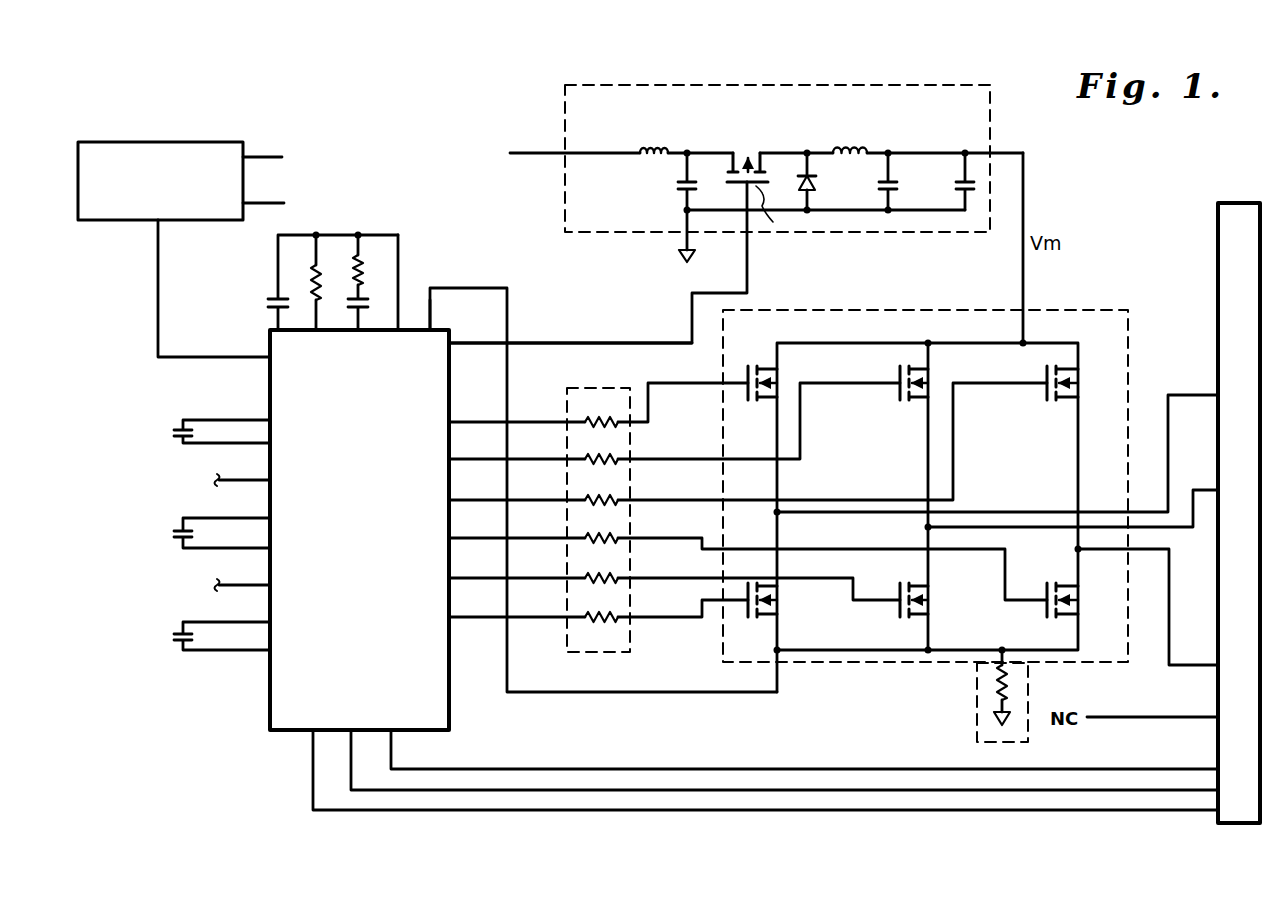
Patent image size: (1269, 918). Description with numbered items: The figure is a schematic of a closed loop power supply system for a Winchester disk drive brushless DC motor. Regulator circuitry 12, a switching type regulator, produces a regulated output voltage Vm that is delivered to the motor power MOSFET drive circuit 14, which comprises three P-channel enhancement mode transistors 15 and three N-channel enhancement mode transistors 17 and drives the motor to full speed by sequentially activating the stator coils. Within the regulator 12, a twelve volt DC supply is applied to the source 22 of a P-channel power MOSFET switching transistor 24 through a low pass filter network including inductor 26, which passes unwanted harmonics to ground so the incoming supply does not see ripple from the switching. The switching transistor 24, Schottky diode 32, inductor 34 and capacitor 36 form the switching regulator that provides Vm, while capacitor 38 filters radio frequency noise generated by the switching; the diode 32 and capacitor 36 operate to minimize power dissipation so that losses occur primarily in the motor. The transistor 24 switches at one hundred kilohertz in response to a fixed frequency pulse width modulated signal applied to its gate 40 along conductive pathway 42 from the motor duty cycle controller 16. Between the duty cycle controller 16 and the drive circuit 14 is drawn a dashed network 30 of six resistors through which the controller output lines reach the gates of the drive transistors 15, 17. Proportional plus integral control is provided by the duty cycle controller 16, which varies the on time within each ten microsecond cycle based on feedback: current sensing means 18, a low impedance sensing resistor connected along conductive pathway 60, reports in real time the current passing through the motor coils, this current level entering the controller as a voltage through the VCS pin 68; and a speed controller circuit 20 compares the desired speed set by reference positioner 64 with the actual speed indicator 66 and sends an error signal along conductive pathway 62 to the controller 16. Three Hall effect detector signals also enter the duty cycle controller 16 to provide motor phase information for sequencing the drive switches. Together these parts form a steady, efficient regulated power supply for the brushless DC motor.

The regulator circuitry 12 is at (562, 105).
The motor power MOSFET drive circuit 14 is at (1084, 303).
The P-channel enhancement mode transistors 15 is at (779, 388).
The motor duty cycle controller 16 is at (288, 660).
The N-channel enhancement mode transistors 17 is at (779, 596).
The current sensing means 18 is at (973, 712).
The speed controller circuit 20 is at (104, 162).
The source 22 is at (740, 150).
The P-channel power MOSFET switching transistor 24 is at (760, 145).
The inductor 26 is at (655, 150).
The gate resistor network 30 is at (606, 652).
The Schottky diode 32 is at (818, 184).
The inductor 34 is at (855, 150).
The capacitor 36 is at (900, 182).
The capacitor 38 is at (988, 181).
The gate 40 is at (773, 222).
The conductive pathway 42 is at (632, 343).
The conductive pathway 60 is at (480, 288).
The conductive pathway 62 is at (182, 358).
The reference positioner 64 is at (272, 157).
The actual speed indicator 66 is at (268, 203).
The VCS pin 68 is at (430, 328).